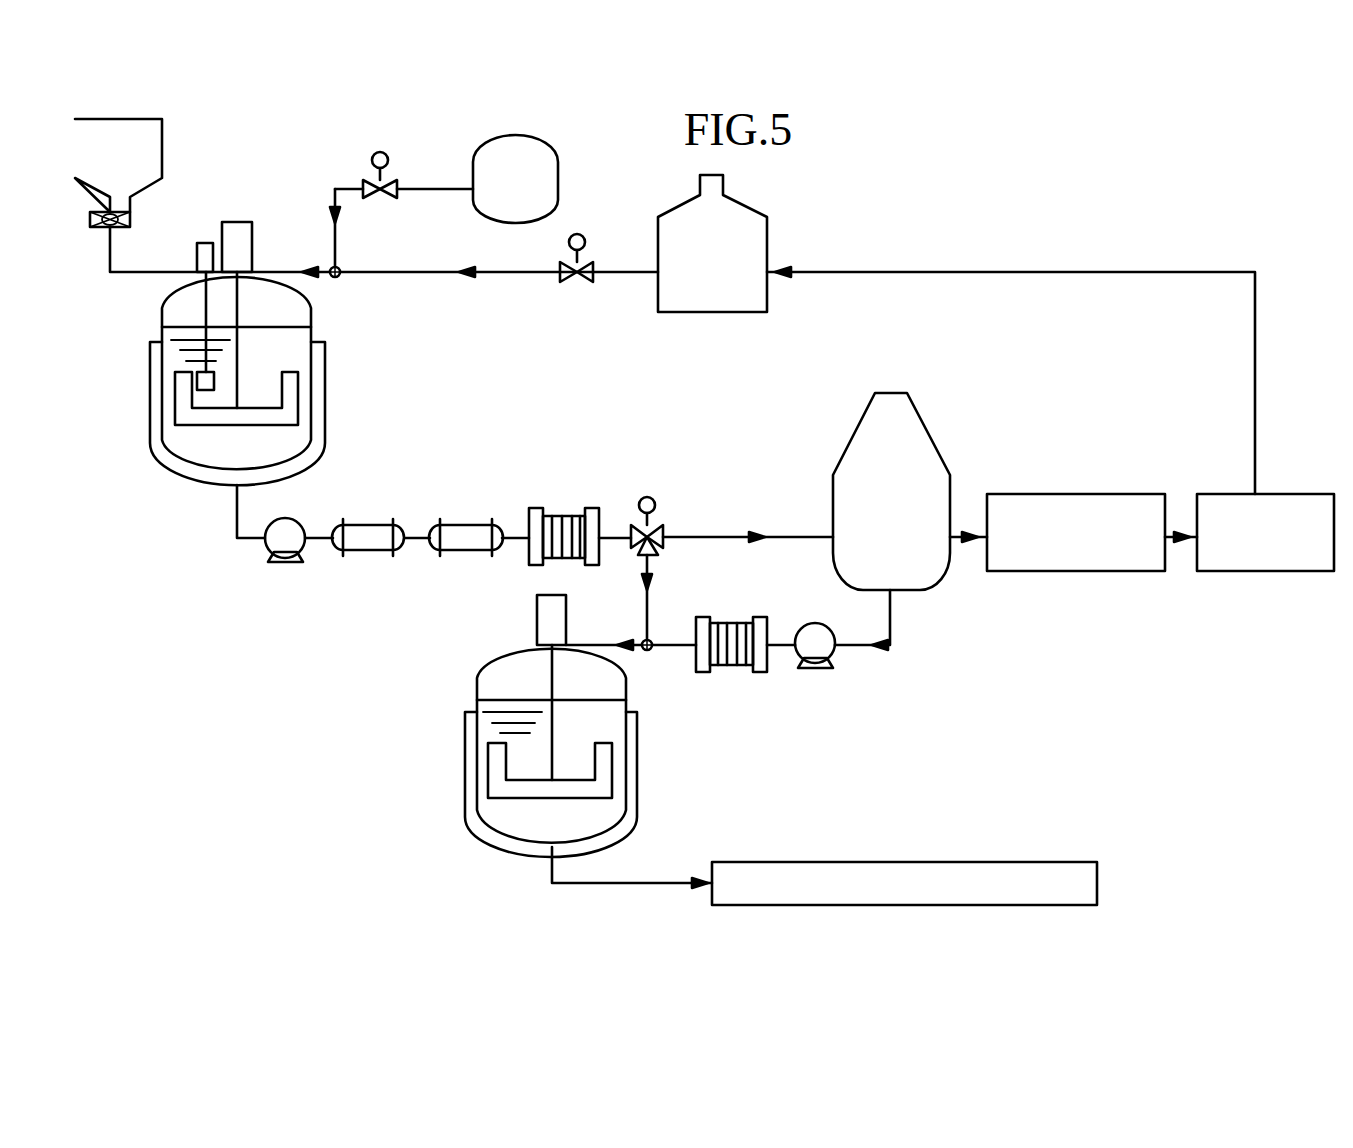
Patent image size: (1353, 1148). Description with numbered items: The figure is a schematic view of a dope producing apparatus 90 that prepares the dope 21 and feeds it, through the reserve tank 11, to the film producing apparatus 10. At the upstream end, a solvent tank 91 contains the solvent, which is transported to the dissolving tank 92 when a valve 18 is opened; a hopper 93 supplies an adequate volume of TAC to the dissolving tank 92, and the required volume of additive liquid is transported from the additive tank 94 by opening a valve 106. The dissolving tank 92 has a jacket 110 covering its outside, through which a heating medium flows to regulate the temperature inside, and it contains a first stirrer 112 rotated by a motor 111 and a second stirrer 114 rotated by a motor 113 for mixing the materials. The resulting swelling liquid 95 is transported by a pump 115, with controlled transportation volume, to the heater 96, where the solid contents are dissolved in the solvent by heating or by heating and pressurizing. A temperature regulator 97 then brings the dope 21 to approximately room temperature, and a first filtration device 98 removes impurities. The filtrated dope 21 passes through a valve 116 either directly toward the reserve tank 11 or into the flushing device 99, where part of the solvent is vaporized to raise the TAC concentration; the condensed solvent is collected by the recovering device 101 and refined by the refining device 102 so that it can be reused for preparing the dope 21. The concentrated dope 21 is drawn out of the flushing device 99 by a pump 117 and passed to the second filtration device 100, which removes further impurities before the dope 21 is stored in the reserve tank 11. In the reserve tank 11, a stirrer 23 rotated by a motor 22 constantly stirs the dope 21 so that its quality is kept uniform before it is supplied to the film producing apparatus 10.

The dope producing apparatus 90 is at (974, 238).
The hopper 93 is at (162, 121).
The motor 111 is at (239, 222).
The motor 113 is at (205, 243).
The valve 106 is at (370, 157).
The additive tank 94 is at (558, 178).
The valve 18 is at (560, 284).
The solvent tank 91 is at (767, 216).
The dissolving tank 92 is at (312, 311).
The jacket 110 is at (325, 430).
The swelling liquid 95 is at (185, 447).
The first stirrer 112 is at (300, 395).
The second stirrer 114 is at (197, 380).
The pump 115 is at (285, 564).
The heater 96 is at (368, 523).
The temperature regulator 97 is at (467, 523).
The first filtration device 98 is at (563, 508).
The valve 116 is at (647, 497).
The flushing device 99 is at (887, 393).
The recovering device 101 is at (1058, 572).
The refining device 102 is at (1255, 572).
The second filtration device 100 is at (728, 673).
The pump 117 is at (815, 668).
The motor 22 is at (537, 618).
The reserve tank 11 is at (477, 678).
The dope 21 is at (607, 808).
The stirrer 23 is at (488, 768).
The film producing apparatus 10 is at (1100, 883).